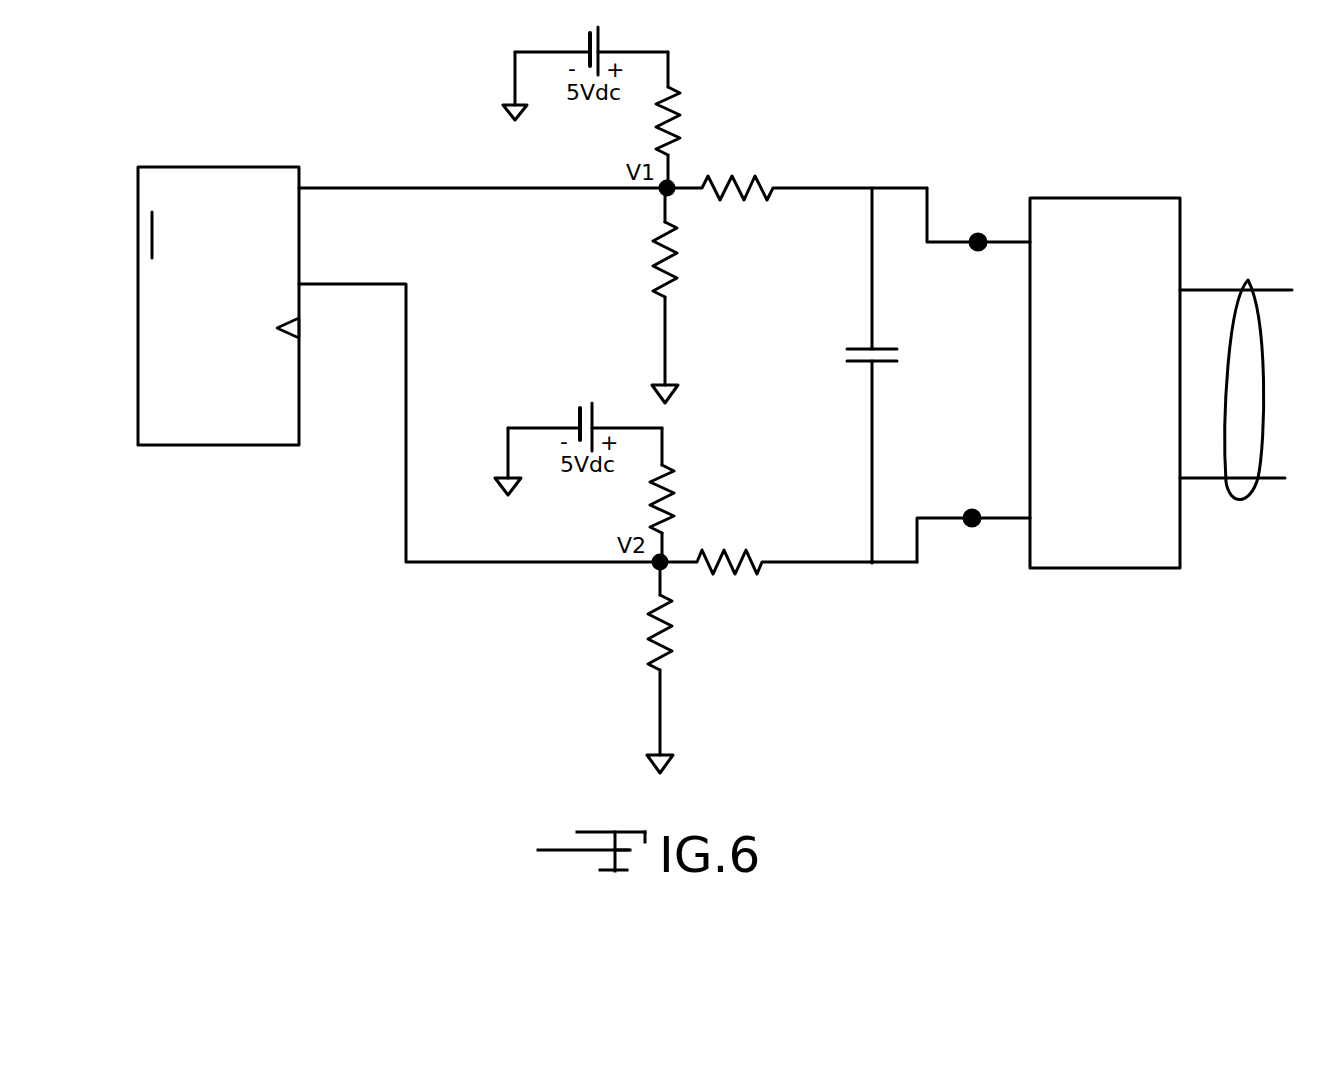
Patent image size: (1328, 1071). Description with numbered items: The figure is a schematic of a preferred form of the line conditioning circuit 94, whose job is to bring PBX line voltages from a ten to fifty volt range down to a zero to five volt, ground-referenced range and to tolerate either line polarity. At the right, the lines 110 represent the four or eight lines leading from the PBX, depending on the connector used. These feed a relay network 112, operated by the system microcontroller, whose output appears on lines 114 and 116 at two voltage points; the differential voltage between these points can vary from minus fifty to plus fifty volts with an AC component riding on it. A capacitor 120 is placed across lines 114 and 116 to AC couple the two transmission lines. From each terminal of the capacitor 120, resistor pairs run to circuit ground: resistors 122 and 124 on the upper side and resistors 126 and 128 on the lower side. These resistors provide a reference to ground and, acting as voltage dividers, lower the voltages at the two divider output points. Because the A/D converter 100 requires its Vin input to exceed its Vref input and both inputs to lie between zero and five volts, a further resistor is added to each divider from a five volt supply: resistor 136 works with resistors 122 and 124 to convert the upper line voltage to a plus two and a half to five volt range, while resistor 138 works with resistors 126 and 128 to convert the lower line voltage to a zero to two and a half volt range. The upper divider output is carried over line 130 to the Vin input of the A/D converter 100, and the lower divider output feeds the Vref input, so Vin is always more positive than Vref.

The line conditioning circuit 94 is at (405, 100).
The A/D converter 100 is at (138, 412).
The lines 110 is at (1244, 290).
The relay network 112 is at (1128, 197).
The line 114 is at (1003, 240).
The line 116 is at (995, 520).
The capacitor 120 is at (880, 346).
The resistor 122 is at (748, 188).
The resistor 124 is at (676, 276).
The resistor 126 is at (762, 568).
The resistor 128 is at (672, 640).
The line 130 is at (497, 187).
The resistor 136 is at (676, 92).
The resistor 138 is at (668, 468).